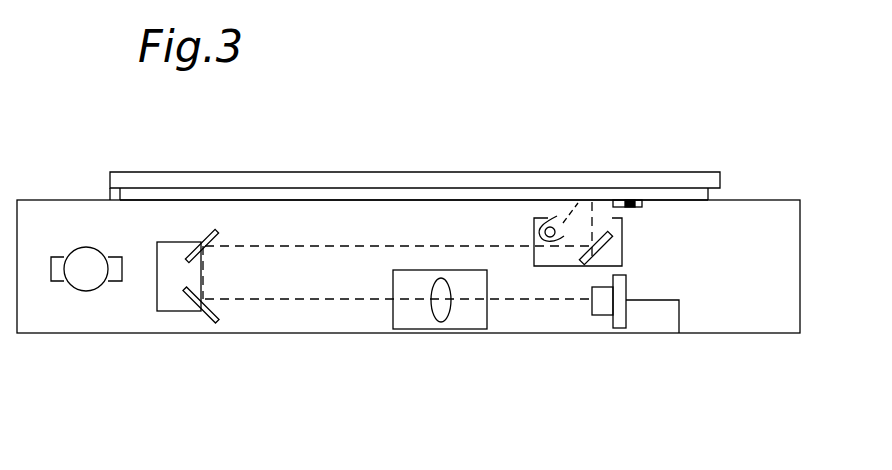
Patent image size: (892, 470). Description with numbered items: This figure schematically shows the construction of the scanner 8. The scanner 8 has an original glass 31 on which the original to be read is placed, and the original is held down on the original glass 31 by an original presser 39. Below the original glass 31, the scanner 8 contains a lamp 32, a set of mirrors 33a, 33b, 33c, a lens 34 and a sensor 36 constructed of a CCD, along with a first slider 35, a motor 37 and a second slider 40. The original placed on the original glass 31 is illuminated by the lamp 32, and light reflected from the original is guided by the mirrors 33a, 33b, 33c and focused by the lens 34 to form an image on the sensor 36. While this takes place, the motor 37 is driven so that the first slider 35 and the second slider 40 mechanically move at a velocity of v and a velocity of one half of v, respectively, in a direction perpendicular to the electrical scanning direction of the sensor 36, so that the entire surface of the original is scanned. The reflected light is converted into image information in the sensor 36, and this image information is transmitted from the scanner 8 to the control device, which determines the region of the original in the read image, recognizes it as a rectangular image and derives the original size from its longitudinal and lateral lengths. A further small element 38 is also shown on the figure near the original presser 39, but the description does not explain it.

The scanner 8 is at (766, 193).
The original glass 31 is at (412, 197).
The lamp 32 is at (534, 234).
The mirror 33a is at (612, 246).
The mirror 33b is at (203, 234).
The mirror 33c is at (212, 312).
The lens 34 is at (431, 290).
The first slider 35 is at (582, 265).
The sensor 36 is at (592, 306).
The motor 37 is at (84, 247).
The sensor 38 is at (631, 201).
The original presser 39 is at (690, 178).
The second slider 40 is at (157, 305).